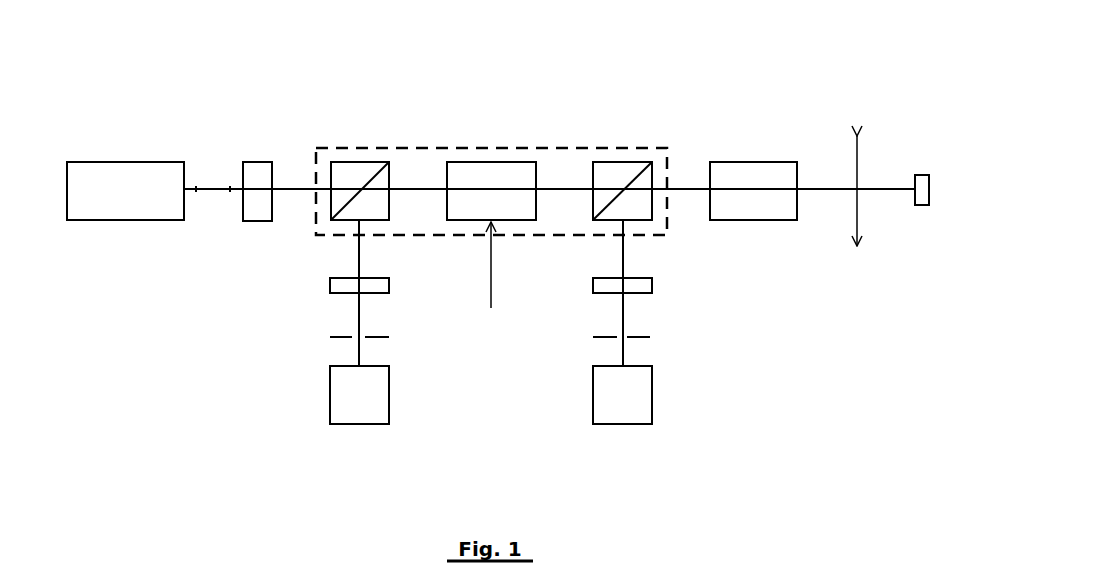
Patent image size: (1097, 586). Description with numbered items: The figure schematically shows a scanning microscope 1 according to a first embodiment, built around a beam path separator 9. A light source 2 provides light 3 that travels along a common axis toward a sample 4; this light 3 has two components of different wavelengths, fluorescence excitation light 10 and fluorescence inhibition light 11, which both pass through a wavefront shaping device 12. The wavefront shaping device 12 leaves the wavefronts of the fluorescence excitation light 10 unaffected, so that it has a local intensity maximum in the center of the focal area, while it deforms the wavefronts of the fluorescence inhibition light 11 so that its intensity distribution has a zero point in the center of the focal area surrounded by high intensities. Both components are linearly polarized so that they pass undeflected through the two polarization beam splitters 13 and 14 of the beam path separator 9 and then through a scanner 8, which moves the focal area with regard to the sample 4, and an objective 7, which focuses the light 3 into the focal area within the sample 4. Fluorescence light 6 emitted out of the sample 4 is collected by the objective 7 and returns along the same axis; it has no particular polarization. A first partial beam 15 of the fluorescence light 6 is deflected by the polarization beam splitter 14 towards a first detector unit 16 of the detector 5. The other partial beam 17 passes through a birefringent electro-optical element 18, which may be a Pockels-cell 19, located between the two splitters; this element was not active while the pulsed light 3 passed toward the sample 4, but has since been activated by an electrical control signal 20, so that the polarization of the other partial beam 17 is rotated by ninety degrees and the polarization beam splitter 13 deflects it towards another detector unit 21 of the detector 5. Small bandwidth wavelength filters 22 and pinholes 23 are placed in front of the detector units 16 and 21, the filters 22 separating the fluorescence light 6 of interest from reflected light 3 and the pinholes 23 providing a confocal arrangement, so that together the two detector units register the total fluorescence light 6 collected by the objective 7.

The scanning microscope 1 is at (160, 97).
The light source 2 is at (121, 222).
The light 3 is at (212, 192).
The sample 4 is at (922, 173).
The detector 5 is at (393, 415).
The fluorescence light 6 is at (358, 353).
The objective 7 is at (858, 217).
The scanner 8 is at (760, 160).
The beam path separator 9 is at (569, 147).
The fluorescence excitation light 10 is at (196, 188).
The fluorescence inhibition light 11 is at (230, 188).
The wavefront shaping device 12 is at (262, 162).
The polarization beam splitter 13 is at (351, 160).
The polarization beam splitter 14 is at (625, 160).
The first partial beam 15 is at (623, 314).
The first detector unit 16 is at (652, 393).
The other partial beam 17 is at (358, 312).
The birefringent electro-optical element 18 is at (485, 160).
The Pockels-cell 19 is at (491, 191).
The electrical control signal 20 is at (492, 278).
The detector unit 21 is at (330, 393).
The small bandwidth wavelength filters 22 is at (330, 283).
The pinholes 23 is at (352, 337).